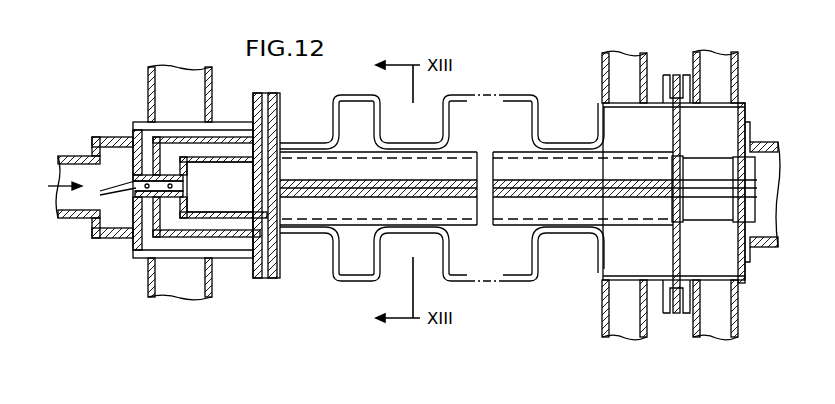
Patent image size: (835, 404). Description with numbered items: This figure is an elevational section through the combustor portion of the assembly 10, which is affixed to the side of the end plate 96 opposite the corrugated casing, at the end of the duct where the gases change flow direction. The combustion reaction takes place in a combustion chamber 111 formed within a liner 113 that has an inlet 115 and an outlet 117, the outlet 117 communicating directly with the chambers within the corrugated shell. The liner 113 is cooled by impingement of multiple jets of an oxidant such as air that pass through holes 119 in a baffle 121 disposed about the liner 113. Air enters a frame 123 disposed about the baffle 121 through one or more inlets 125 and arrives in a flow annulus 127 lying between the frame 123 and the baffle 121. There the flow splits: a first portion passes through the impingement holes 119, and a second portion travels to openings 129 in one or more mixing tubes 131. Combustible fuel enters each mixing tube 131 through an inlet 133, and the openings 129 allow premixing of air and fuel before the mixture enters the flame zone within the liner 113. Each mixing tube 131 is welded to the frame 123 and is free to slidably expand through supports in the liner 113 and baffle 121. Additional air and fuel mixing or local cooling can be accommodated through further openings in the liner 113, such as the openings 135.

The exhaust gas oxygen sensor assembly 10 is at (524, 74).
The plate 96 is at (263, 285).
The combustion chamber 111 is at (282, 232).
The liner 113 is at (222, 225).
The inlet 115 is at (220, 187).
The outlet 117 is at (284, 141).
The holes 119 is at (183, 238).
The baffle 121 is at (170, 238).
The frame 123 is at (133, 126).
The inlets 125 is at (148, 291).
The flow annulus 127 is at (146, 240).
The openings 129 is at (102, 196).
The mixing tube 131 is at (133, 192).
The inlet 133 is at (57, 180).
The openings 135 is at (184, 179).